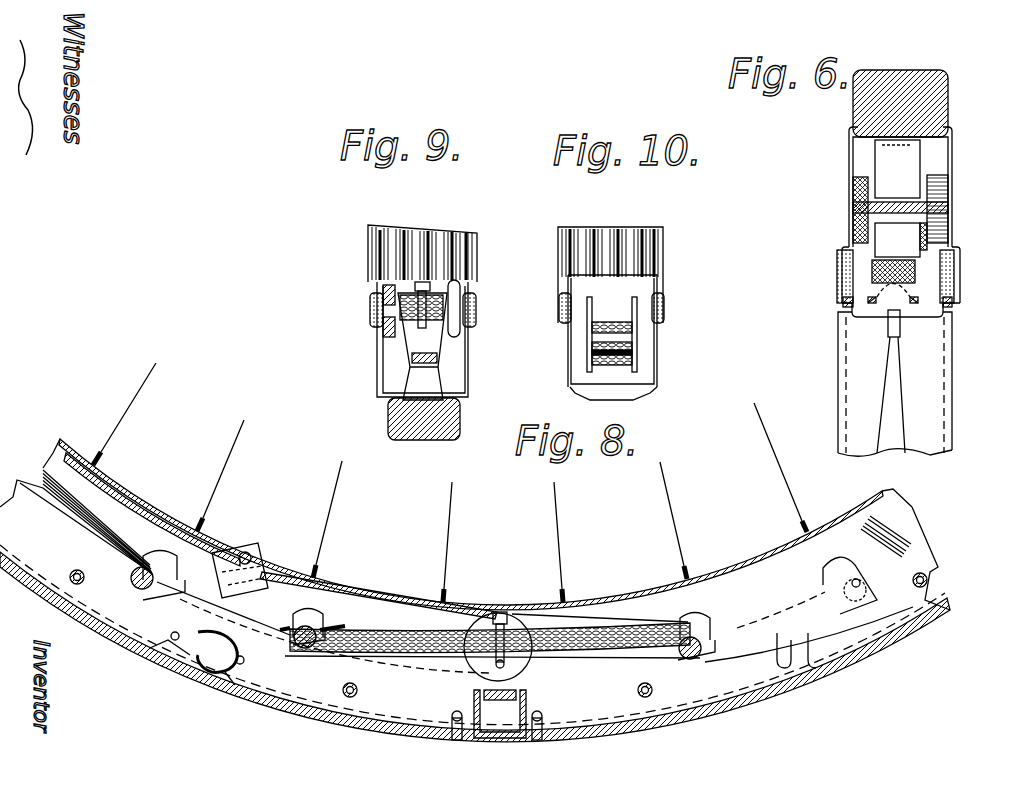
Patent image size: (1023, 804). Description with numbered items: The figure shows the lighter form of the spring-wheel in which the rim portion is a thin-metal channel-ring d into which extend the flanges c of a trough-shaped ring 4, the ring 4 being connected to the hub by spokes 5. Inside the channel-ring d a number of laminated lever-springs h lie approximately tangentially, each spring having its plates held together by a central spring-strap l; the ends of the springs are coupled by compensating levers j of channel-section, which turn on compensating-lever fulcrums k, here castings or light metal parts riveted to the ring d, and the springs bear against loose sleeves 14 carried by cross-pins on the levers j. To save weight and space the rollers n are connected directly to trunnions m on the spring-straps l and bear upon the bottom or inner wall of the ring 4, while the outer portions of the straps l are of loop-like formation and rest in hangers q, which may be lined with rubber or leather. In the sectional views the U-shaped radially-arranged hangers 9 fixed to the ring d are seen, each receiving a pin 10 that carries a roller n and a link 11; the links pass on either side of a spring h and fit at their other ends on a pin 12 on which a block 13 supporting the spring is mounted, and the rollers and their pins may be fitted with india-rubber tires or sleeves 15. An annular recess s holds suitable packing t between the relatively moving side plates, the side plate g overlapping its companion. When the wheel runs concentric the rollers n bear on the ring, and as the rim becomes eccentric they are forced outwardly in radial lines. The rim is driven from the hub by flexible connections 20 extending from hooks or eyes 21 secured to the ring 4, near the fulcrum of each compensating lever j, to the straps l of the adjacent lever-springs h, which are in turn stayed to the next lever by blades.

In FIG. 6, the trough-shaped ring 4 is at (895, 384).
In FIG. 9, the trough-shaped ring 4 is at (422, 253).
In FIG. 10, the trough-shaped ring 4 is at (610, 275).
In FIG. 8, the trough-shaped ring 4 is at (126, 488).
In FIG. 6, the spokes 5 is at (900, 383).
In FIG. 8, the spokes 5 is at (680, 494).
In FIG. 6, the U-shaped hangers 9 is at (897, 169).
In FIG. 6, the pin 10 is at (930, 192).
In FIG. 6, the link 11 is at (928, 238).
In FIG. 6, the pin 12 is at (893, 297).
In FIG. 6, the block 13 is at (918, 300).
In FIG. 8, the loose sleeves 14 is at (130, 583).
In FIG. 6, the tires or sleeves 15 is at (850, 176).
In FIG. 9, the tires or sleeves 15 is at (386, 340).
In FIG. 8, the flexible connections 20 is at (345, 588).
In FIG. 8, the hooks or eyes 21 is at (240, 548).
In FIG. 6, the flanges c is at (945, 262).
In FIG. 6, the channel-ring d is at (946, 133).
In FIG. 9, the channel-ring d is at (390, 395).
In FIG. 10, the channel-ring d is at (575, 395).
In FIG. 8, the channel-ring d is at (708, 710).
In FIG. 9, the annular side plate g is at (470, 358).
In FIG. 10, the annular side plate g is at (567, 350).
In FIG. 6, the laminated lever-spring h is at (874, 300).
In FIG. 9, the laminated lever-spring h is at (422, 330).
In FIG. 8, the laminated lever-spring h is at (70, 505).
In FIG. 10, the compensating lever j is at (630, 305).
In FIG. 8, the compensating lever j is at (510, 584).
In FIG. 10, the compensating-lever fulcrum k is at (612, 354).
In FIG. 8, the compensating-lever fulcrum k is at (180, 636).
In FIG. 9, the spring-strap l is at (430, 286).
In FIG. 8, the spring-strap l is at (506, 612).
In FIG. 9, the trunnions m is at (382, 296).
In FIG. 6, the rollers n is at (852, 204).
In FIG. 9, the rollers n is at (462, 320).
In FIG. 8, the rollers n is at (525, 658).
In FIG. 9, the hangers q is at (423, 383).
In FIG. 6, the annular recess s is at (840, 262).
In FIG. 9, the annular recess s is at (370, 310).
In FIG. 10, the annular recess s is at (560, 310).
In FIG. 6, the packing t is at (844, 298).